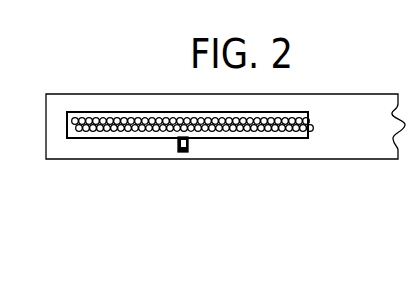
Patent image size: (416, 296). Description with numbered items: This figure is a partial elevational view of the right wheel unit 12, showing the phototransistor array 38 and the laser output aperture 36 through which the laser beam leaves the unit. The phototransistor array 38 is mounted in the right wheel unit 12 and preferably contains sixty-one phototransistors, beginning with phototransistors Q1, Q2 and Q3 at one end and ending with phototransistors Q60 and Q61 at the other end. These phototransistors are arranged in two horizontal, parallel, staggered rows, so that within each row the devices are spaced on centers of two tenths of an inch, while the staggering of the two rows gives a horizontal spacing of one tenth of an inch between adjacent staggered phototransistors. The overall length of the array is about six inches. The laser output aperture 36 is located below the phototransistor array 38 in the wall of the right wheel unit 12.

The right wheel unit 12 is at (346, 92).
The phototransistor array 38 is at (138, 138).
The laser output aperture 36 is at (183, 152).
The phototransistor Q1 is at (74, 120).
The phototransistor Q2 is at (79, 129).
The phototransistor Q3 is at (82, 120).
The phototransistor Q60 is at (309, 137).
The phototransistor Q61 is at (309, 120).